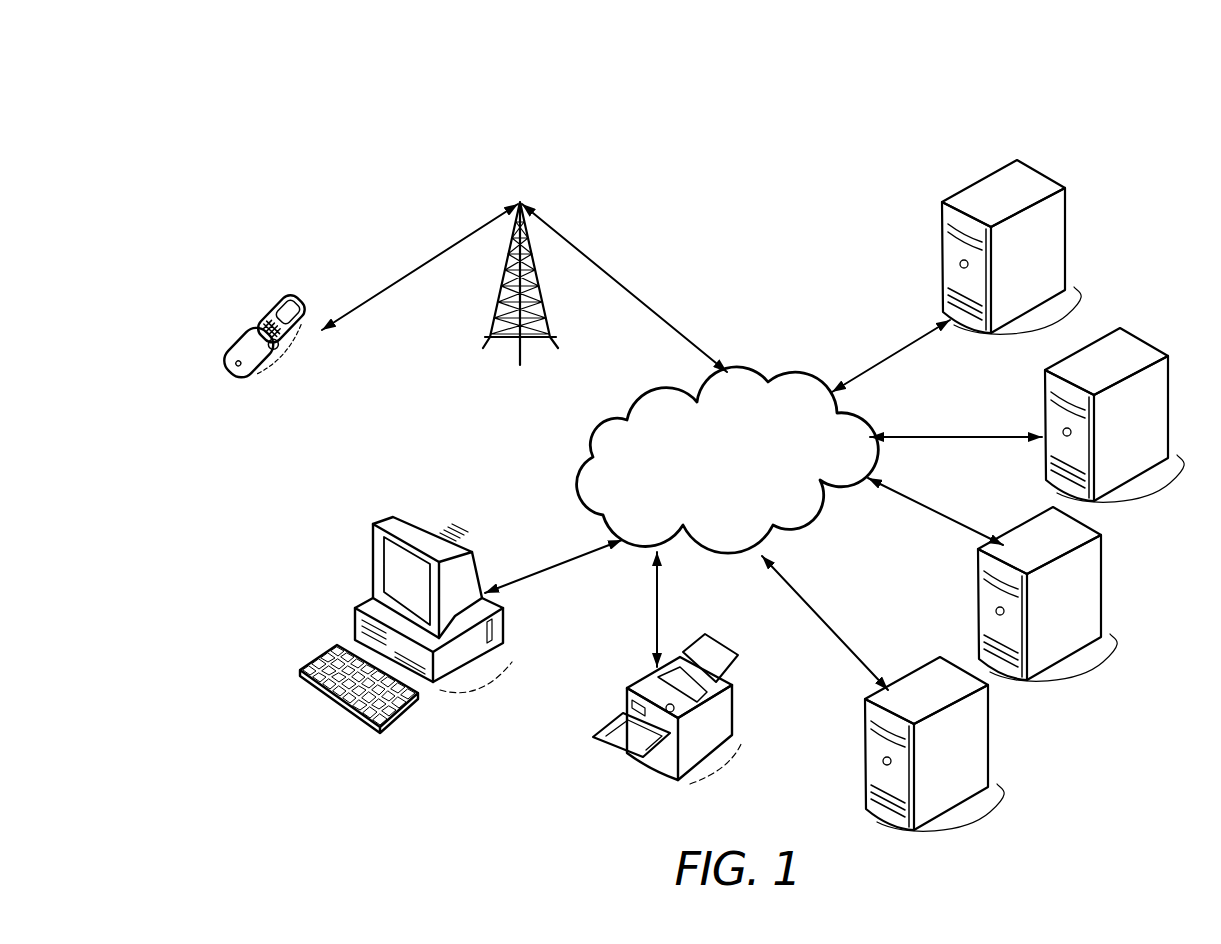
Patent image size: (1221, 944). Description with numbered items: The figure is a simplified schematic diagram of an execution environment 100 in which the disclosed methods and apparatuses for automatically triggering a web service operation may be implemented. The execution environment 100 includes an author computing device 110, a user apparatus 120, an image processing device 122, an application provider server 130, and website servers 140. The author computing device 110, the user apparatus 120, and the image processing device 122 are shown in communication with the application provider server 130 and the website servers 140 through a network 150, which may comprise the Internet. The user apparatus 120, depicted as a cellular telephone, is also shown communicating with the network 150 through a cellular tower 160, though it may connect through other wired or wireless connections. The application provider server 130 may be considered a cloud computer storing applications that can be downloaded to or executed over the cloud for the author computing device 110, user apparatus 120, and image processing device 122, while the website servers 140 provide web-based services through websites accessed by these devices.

The execution environment 100 is at (584, 128).
The author computing device 110 is at (373, 603).
The user apparatus 120 is at (278, 303).
The image processing device 122 is at (657, 768).
The application provider server 130 is at (982, 183).
The website servers 140 is at (1130, 482).
The network 150 is at (733, 497).
The cellular tower 160 is at (495, 348).